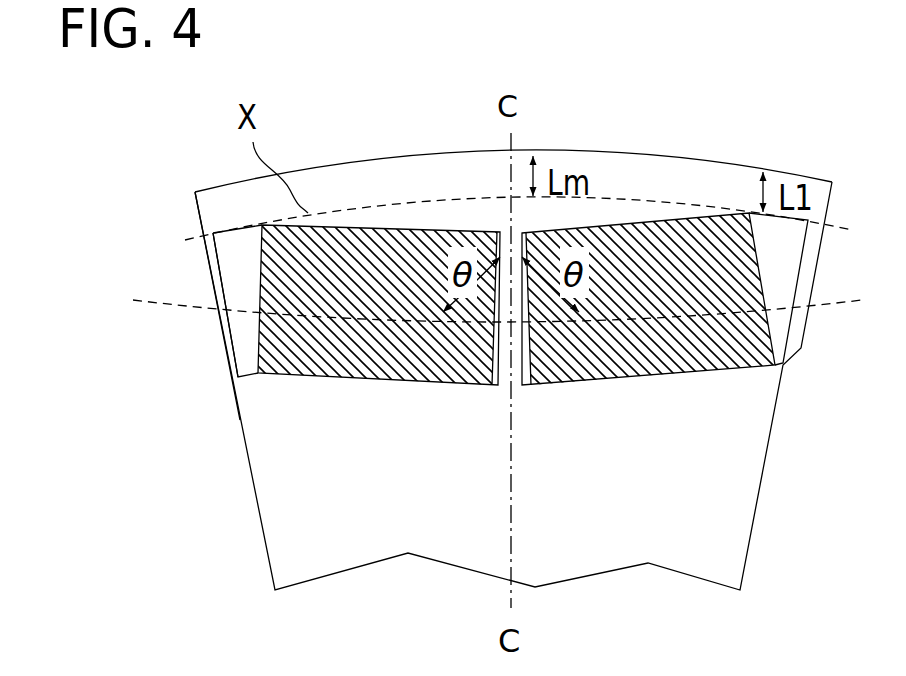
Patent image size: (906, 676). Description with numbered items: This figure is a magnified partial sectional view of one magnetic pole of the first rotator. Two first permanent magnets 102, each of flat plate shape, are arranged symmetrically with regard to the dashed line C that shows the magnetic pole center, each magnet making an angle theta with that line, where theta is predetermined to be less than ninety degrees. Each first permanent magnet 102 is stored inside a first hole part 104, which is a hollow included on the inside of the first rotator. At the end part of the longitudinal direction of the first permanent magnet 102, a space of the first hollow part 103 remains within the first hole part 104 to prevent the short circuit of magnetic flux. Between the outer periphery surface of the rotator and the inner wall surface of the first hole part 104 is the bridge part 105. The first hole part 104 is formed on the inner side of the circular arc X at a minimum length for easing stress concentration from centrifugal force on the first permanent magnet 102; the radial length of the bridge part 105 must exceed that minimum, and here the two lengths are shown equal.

The first permanent magnet 102 is at (257, 360).
The first hollow part 103 is at (248, 317).
The first hole part 104 is at (215, 273).
The bridge part 105 is at (647, 157).